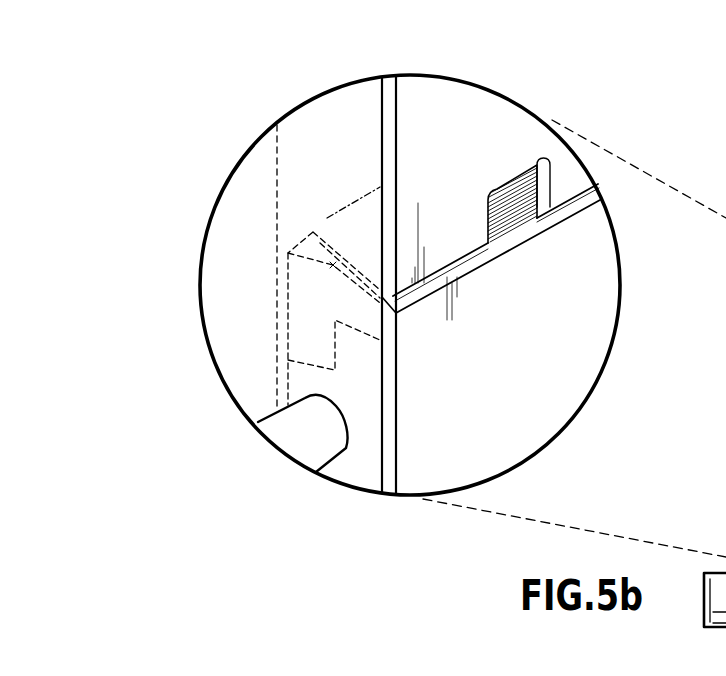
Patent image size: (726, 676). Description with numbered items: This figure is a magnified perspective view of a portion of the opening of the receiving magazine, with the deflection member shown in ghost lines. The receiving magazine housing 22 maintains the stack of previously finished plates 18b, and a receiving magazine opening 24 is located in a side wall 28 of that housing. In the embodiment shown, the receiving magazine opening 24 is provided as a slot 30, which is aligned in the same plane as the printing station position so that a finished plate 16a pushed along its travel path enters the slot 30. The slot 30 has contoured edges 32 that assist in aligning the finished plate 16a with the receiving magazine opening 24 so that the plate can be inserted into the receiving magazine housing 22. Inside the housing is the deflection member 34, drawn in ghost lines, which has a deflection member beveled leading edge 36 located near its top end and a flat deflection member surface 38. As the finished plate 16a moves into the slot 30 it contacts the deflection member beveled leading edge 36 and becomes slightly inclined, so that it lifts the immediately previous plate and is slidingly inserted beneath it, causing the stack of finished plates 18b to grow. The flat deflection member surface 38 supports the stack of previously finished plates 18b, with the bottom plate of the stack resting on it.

The finished plate 16a is at (357, 222).
The stack of previously finished plates 18b is at (530, 185).
The receiving magazine housing 22 is at (300, 145).
The receiving magazine opening 24 is at (604, 188).
The side wall 28 is at (447, 447).
The slot 30 is at (518, 220).
The contoured edges 32 is at (490, 252).
The deflection member 34 is at (348, 463).
The deflection member beveled leading edge 36 is at (358, 277).
The flat deflection member surface 38 is at (313, 253).